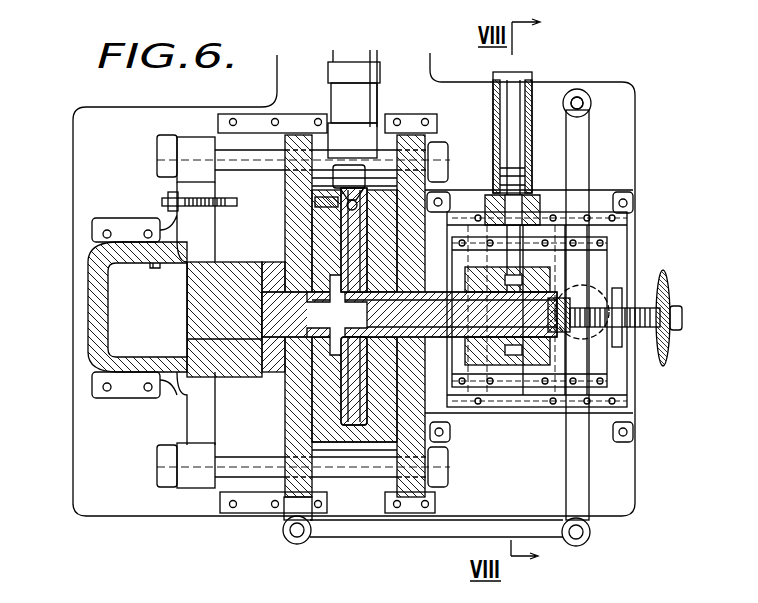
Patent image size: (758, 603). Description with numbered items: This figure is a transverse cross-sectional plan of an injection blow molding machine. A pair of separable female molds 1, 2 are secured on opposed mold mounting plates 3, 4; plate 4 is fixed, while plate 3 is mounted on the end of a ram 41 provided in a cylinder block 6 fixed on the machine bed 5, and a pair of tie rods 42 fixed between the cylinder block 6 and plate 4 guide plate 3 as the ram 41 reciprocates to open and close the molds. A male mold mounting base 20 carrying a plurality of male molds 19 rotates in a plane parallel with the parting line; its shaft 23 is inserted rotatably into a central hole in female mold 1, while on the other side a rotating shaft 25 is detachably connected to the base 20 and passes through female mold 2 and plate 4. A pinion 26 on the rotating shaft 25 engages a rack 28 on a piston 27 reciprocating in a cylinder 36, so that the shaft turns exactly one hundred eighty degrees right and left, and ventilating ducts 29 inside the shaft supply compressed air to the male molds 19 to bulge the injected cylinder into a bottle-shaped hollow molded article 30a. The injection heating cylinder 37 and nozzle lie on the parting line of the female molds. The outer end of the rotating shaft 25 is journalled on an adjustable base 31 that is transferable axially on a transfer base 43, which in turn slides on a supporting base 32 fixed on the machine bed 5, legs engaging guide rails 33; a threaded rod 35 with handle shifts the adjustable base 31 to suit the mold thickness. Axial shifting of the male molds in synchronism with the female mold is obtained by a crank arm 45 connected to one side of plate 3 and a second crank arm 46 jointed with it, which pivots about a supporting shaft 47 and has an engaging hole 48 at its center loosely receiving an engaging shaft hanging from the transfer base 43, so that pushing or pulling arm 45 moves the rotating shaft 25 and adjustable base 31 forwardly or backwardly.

The separable female mold 1 is at (340, 450).
The separable female mold 2 is at (378, 450).
The mold mounting plate 3 is at (285, 228).
The mold mounting plate 4 is at (410, 140).
The machine bed 5 is at (73, 160).
The cylinder block 6 is at (88, 300).
The male mold 19 is at (290, 380).
The male mold mounting base 20 is at (370, 258).
The shaft 23 is at (263, 268).
The rotating shaft 25 is at (388, 312).
The pinion 26 is at (497, 402).
The piston 27 is at (512, 212).
The rack 28 is at (525, 402).
The ventilating duct 29 is at (456, 402).
The hollow molded article 30a is at (292, 408).
The adjustable base 31 is at (465, 217).
The supporting base 32 is at (617, 236).
The guide rail 33 is at (630, 215).
The threaded rod with handle 35 is at (664, 300).
The cylinder 36 is at (520, 75).
The injection heating cylinder 37 is at (332, 74).
The ram 41 is at (245, 322).
The tie rod 42 is at (240, 152).
The transfer base 43 is at (592, 288).
The crank arm 45 is at (390, 532).
The crank arm 46 is at (578, 140).
The supporting shaft 47 is at (582, 100).
The engaging hole 48 is at (598, 345).